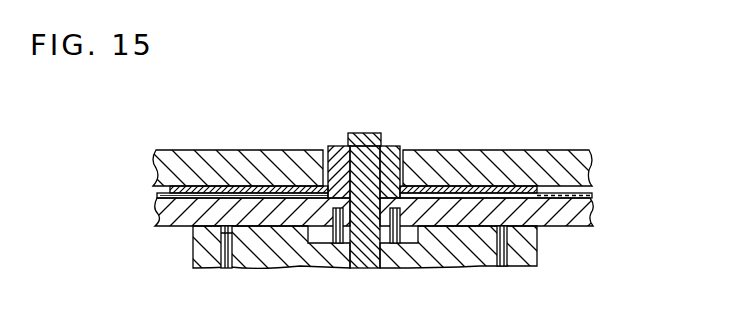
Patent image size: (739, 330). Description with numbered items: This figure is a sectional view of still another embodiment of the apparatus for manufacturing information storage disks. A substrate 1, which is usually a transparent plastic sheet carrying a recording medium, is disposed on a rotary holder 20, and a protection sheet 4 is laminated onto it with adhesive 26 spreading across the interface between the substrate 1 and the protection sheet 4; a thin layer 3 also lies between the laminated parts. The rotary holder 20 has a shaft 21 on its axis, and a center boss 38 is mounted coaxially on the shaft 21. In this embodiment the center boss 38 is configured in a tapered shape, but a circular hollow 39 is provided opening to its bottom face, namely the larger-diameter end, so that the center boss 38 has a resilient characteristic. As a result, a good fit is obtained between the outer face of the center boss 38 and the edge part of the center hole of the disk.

The substrate 1 is at (563, 215).
The thin sheet 3 is at (596, 191).
The protection sheet 4 is at (553, 158).
The rotary holder 20 is at (523, 265).
The shaft 21 is at (364, 141).
The adhesive 26 is at (482, 187).
The center boss 38 is at (397, 146).
The circular hollow 39 is at (394, 244).